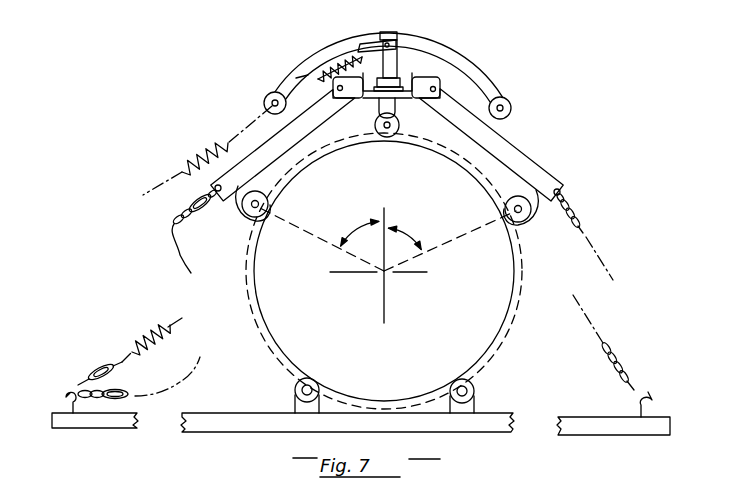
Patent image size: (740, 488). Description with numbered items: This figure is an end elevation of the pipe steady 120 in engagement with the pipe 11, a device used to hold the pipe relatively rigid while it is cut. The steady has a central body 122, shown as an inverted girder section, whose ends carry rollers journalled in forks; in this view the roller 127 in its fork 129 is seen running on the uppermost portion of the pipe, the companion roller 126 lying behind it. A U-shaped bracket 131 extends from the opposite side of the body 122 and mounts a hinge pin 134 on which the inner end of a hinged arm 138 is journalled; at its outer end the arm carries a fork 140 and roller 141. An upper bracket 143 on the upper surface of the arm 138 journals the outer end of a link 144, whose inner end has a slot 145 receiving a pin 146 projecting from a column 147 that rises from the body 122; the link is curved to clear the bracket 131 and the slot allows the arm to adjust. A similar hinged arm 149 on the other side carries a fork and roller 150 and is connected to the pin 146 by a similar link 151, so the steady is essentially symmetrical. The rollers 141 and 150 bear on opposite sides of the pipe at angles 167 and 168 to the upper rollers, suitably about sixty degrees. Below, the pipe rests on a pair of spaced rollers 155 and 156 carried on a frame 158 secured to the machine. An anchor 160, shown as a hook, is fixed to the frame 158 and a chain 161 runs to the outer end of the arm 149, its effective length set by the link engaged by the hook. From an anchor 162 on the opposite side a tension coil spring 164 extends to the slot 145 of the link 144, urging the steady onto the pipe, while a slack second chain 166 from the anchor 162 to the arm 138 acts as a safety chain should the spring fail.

The pipe 11 is at (519, 321).
The steady 120 is at (536, 114).
The central body 122 is at (405, 99).
The roller 126 is at (384, 271).
The roller 127 is at (357, 138).
The fork 129 is at (378, 99).
The U-shaped bracket 131 is at (328, 74).
The hinge pin 134 is at (300, 94).
The hinged arm 138 is at (263, 157).
The fork 140 is at (266, 190).
The roller 141 is at (250, 212).
The upper bracket 143 is at (264, 112).
The link 144 is at (293, 78).
The slot 145 is at (371, 43).
The pin 146 is at (399, 41).
The column 147 is at (398, 66).
The hinged arm 149 is at (508, 147).
The fork and roller 150 is at (524, 219).
The link 151 is at (487, 82).
The roller 155 is at (473, 392).
The roller 156 is at (294, 386).
The frame 158 is at (482, 428).
The anchor 160 is at (637, 405).
The chain 161 is at (590, 247).
The anchor 162 is at (70, 400).
The tension coil spring 164 is at (170, 177).
The second chain 166 is at (183, 263).
The angle 167 is at (359, 228).
The angle 168 is at (411, 231).